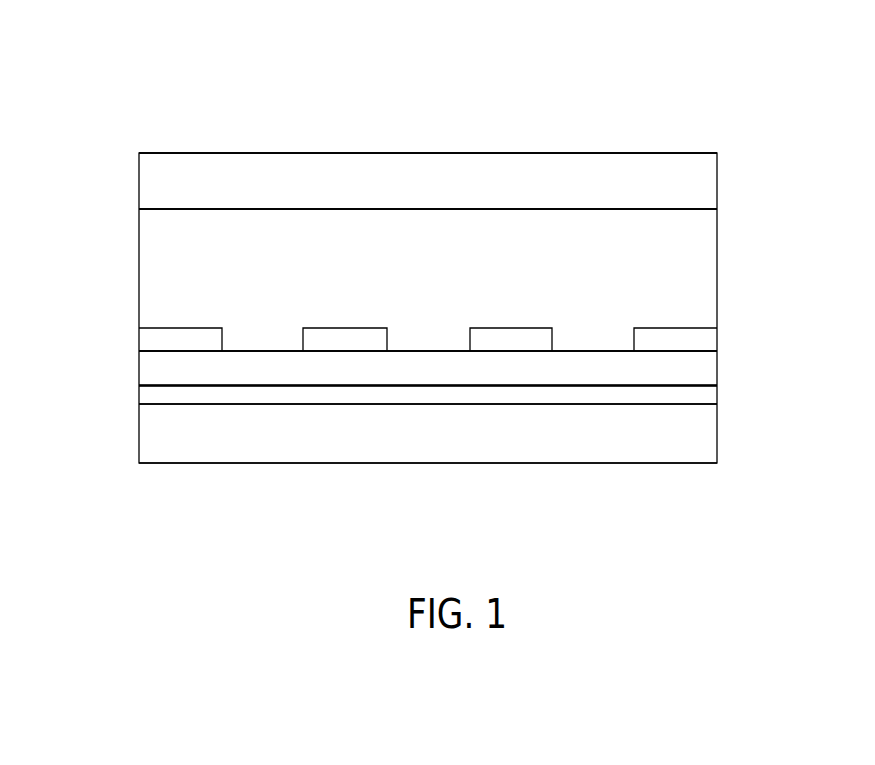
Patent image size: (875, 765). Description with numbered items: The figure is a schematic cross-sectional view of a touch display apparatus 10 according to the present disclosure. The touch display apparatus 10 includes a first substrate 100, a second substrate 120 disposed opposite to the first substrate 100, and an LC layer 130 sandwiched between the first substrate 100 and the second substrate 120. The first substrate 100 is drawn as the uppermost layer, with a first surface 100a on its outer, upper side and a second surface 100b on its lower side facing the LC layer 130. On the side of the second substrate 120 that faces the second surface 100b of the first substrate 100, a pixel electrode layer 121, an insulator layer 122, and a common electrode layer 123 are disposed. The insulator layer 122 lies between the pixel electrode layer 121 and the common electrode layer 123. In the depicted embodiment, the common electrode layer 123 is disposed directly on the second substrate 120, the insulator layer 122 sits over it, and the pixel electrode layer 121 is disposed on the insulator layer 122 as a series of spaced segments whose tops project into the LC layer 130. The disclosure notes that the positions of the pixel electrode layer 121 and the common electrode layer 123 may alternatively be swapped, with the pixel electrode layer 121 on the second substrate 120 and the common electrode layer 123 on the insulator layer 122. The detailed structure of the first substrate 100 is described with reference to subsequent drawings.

The touch display apparatus 10 is at (797, 565).
The first substrate 100 is at (697, 183).
The first surface of the first substrate 100a is at (220, 152).
The second surface of the first substrate 100b is at (247, 211).
The LC layer 130 is at (698, 287).
The pixel electrode layer 121 is at (702, 340).
The insulator layer 122 is at (697, 370).
The common electrode layer 123 is at (697, 395).
The second substrate 120 is at (697, 440).